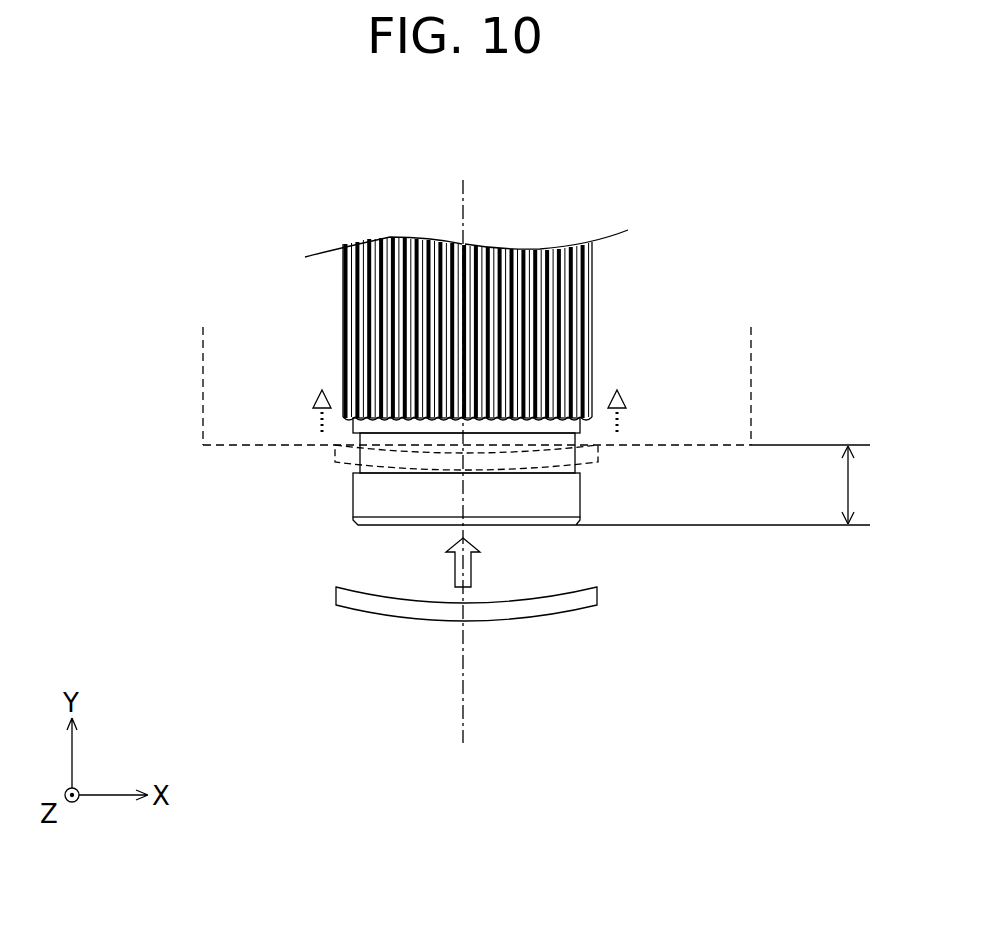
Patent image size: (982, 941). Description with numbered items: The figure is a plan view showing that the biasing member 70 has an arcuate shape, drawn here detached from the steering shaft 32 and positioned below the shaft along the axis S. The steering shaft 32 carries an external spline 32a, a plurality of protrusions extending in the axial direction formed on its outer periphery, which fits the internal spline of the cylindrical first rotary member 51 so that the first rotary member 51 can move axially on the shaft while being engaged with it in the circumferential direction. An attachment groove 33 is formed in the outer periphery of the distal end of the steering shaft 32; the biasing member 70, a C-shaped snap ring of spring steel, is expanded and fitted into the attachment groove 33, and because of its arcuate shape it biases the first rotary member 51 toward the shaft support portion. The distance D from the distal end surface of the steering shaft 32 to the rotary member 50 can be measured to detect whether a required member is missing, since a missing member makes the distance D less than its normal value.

The steering shaft 32 is at (567, 351).
The external spline 32a is at (592, 321).
The attachment groove 33 is at (390, 460).
The rotary member 50 is at (474, 386).
The first rotary member 51 is at (203, 400).
The biasing member 70 is at (598, 462).
The optical axis S is at (465, 700).
The distance D is at (863, 485).